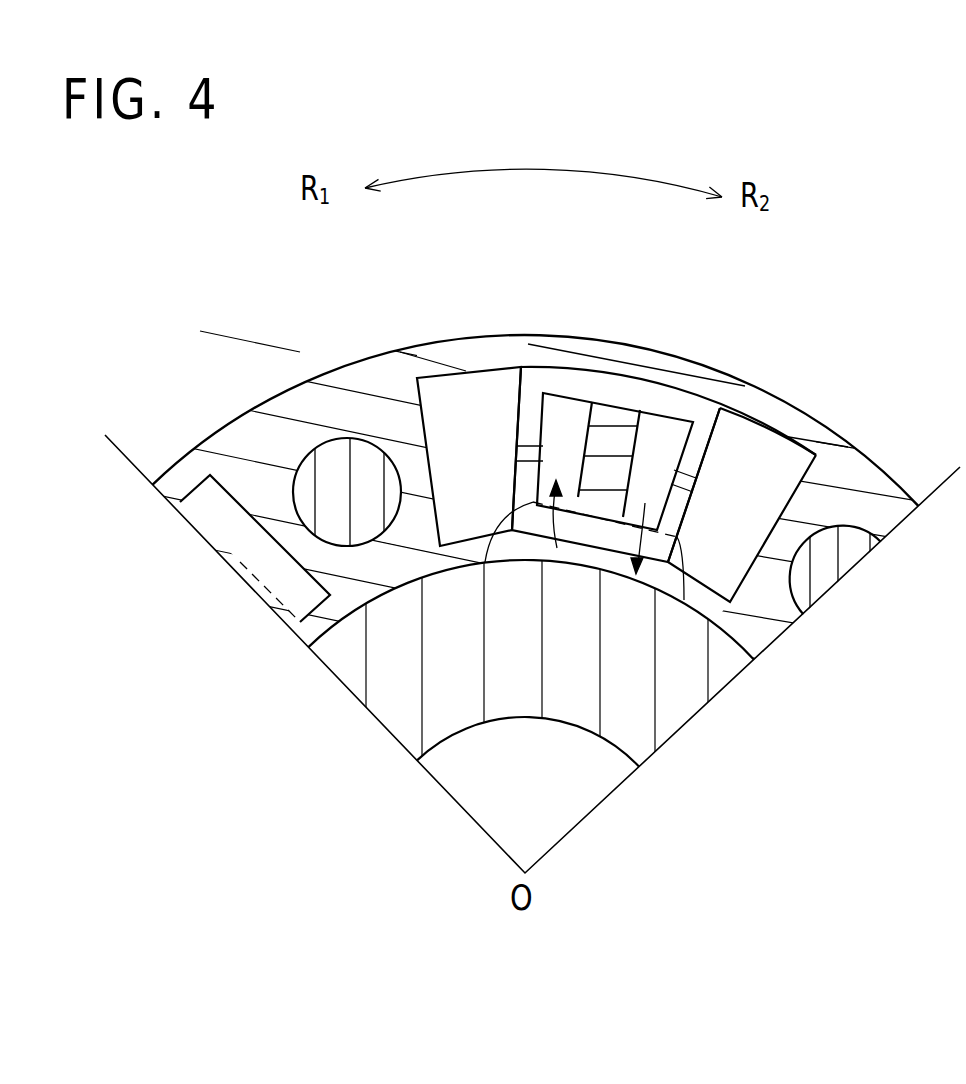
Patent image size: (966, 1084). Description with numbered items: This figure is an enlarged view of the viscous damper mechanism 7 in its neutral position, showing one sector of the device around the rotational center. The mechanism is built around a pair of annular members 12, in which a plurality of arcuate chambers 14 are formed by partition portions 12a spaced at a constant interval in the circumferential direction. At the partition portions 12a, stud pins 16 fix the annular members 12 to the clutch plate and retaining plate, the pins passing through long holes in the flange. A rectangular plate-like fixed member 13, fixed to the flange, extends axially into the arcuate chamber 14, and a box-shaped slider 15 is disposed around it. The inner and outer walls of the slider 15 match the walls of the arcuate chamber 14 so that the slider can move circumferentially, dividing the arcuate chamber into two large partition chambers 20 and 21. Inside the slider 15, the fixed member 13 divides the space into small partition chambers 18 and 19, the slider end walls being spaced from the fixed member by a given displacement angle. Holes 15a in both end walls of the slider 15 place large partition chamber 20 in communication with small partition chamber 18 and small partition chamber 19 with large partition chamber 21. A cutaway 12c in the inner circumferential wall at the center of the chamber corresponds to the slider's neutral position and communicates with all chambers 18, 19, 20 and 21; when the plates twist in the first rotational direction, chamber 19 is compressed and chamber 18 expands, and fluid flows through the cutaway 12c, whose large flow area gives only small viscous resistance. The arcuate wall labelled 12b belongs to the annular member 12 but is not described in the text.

The viscous damper mechanism 7 is at (806, 364).
The annular member 12 is at (405, 329).
The partition portion 12a is at (275, 500).
The outer bridge portion 12b is at (530, 360).
The cutaway 12c is at (684, 583).
The fixed member 13 is at (610, 437).
The arcuate chamber 14 is at (793, 426).
The slider 15 is at (697, 412).
The hole 15a is at (517, 447).
The stud pin 16 is at (330, 502).
The small partition chamber 18 is at (579, 471).
The small partition chamber 19 is at (671, 473).
The large partition chamber 20 is at (500, 473).
The large partition chamber 21 is at (755, 517).